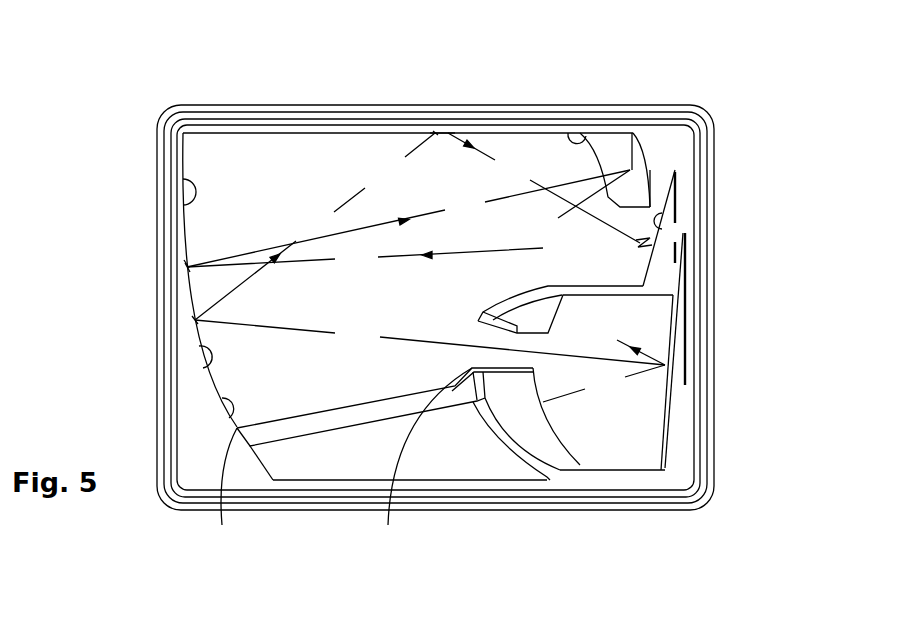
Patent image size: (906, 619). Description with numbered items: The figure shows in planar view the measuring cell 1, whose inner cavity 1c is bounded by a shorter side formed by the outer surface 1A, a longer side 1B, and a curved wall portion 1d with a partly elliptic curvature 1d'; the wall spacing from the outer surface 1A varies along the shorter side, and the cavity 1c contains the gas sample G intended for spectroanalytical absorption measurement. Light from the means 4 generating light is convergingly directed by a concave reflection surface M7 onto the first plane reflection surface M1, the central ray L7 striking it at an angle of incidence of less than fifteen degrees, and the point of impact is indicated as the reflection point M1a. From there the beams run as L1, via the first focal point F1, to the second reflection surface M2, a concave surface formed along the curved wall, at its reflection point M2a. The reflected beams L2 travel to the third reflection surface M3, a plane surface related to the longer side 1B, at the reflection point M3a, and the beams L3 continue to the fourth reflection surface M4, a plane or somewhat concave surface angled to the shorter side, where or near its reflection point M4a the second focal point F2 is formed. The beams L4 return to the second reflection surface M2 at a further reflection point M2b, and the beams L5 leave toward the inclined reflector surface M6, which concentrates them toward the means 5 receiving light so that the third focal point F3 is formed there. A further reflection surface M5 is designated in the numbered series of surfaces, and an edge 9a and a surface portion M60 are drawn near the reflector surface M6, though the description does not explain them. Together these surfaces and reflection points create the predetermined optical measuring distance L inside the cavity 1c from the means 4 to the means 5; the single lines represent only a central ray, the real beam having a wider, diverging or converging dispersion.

The measuring cell 1 is at (222, 97).
The outer surface / shorter side of the measuring cell 1A is at (157, 420).
The longer side of the measuring cell 1B is at (290, 105).
The inner cavity 1c is at (716, 318).
The curved wall portion 1d is at (235, 496).
The partly elliptic curvature 1d' is at (149, 176).
The means generating light 4 is at (517, 382).
The means receiving light 5 is at (575, 131).
The mirror edge 9a is at (648, 168).
The first reflection surface M1 is at (664, 423).
The reflection point of the first reflection surface M1a is at (667, 366).
The second reflection surface M2 is at (199, 349).
The reflection point of the second reflection surface M2a is at (195, 320).
The fifth reflection point M2b is at (188, 268).
The third reflection surface M3 is at (448, 133).
The reflection point of the third reflection surface M3a is at (435, 133).
The fourth reflection surface M4 is at (663, 228).
The reflection point of the fourth reflection surface M4a is at (660, 245).
The fifth reflection surface M5 is at (185, 262).
The reflector surface M6 is at (640, 142).
The mirror M6 surface M60 is at (647, 172).
The concave reflection surface M7 is at (548, 312).
The light beams L1 is at (430, 342).
The light beams L2 is at (315, 226).
The light beams L3 is at (544, 188).
The light beams L4 is at (365, 260).
The light beams L5 is at (408, 218).
The central ray L7 is at (604, 383).
The first focal point F1 is at (422, 467).
The second focal point F2 is at (667, 212).
The third focal point F3 is at (668, 118).
The optical measuring distance L is at (312, 298).
The gas sample G is at (385, 424).